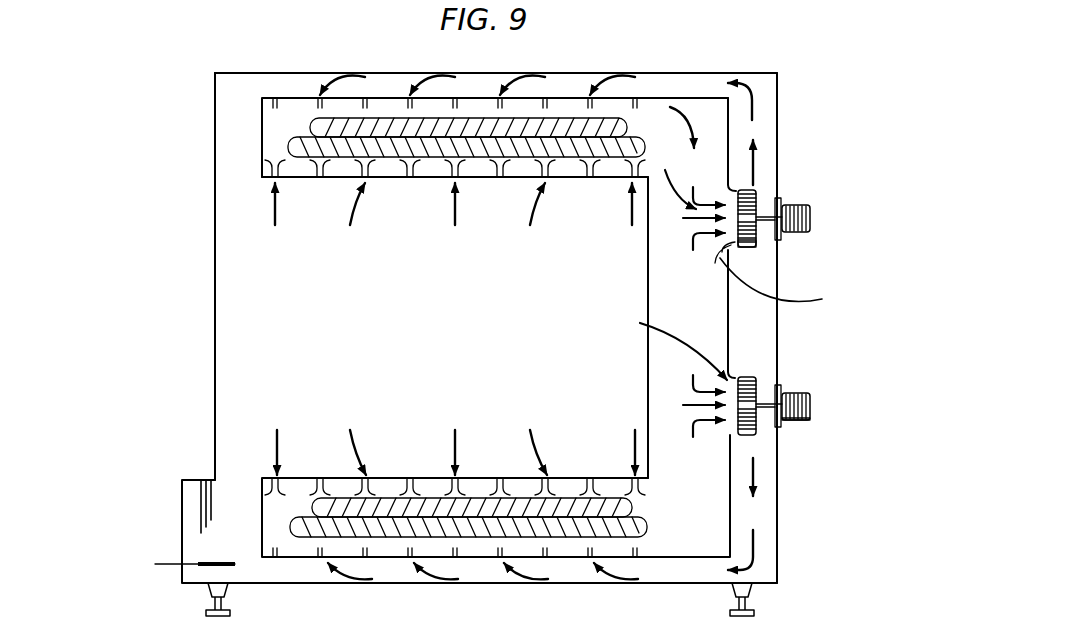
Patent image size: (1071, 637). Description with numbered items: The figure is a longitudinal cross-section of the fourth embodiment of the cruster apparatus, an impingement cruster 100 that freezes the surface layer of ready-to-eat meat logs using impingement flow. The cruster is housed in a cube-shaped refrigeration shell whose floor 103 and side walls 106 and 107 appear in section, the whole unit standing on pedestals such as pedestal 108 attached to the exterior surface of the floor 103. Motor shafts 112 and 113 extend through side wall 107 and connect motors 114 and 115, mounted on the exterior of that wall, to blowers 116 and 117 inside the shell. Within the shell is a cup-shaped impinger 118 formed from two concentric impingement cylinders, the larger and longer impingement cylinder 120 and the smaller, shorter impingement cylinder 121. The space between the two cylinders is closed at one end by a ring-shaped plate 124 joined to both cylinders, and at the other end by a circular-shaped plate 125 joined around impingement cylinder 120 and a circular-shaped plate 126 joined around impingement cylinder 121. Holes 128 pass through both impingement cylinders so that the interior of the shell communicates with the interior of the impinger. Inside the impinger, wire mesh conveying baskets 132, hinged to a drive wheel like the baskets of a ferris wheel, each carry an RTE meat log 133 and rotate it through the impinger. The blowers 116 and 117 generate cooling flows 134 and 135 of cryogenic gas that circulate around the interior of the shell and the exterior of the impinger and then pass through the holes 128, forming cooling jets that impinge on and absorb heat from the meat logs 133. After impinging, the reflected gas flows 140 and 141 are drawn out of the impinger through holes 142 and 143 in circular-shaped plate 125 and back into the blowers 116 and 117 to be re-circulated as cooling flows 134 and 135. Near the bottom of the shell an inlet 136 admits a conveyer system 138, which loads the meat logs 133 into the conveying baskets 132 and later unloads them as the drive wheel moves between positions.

The impingement cruster 100 is at (190, 107).
The floor 103 is at (301, 36).
The side wall 106 is at (215, 322).
The side wall 107 is at (777, 337).
The pedestal 108 is at (210, 600).
The motor shaft 112 is at (812, 218).
The motor shaft 113 is at (812, 405).
The motor 114 is at (781, 205).
The motor 115 is at (802, 420).
The blower 116 is at (750, 250).
The blower 117 is at (790, 385).
The cup-shaped impinger 118 is at (285, 95).
The impingement cylinder 120 is at (382, 98).
The impingement cylinder 121 is at (306, 478).
The ring-shaped plate 124 is at (262, 135).
The circular-shaped plate 125 is at (728, 133).
The circular-shaped plate 126 is at (648, 263).
The holes 128 is at (465, 523).
The conveying basket 132 is at (328, 540).
The RTE meat log 133 is at (393, 508).
The cooling flow 134 is at (347, 196).
The cooling flow 135 is at (444, 442).
The inlet 136 is at (166, 515).
The conveyer system 138 is at (166, 561).
The reflected gas flow 140 is at (688, 197).
The reflected gas flow 141 is at (724, 429).
The hole 142 is at (787, 285).
The hole 143 is at (662, 373).